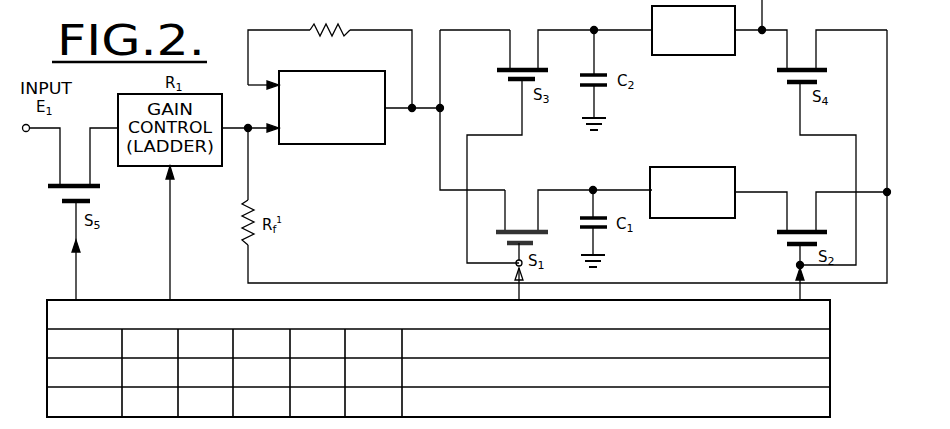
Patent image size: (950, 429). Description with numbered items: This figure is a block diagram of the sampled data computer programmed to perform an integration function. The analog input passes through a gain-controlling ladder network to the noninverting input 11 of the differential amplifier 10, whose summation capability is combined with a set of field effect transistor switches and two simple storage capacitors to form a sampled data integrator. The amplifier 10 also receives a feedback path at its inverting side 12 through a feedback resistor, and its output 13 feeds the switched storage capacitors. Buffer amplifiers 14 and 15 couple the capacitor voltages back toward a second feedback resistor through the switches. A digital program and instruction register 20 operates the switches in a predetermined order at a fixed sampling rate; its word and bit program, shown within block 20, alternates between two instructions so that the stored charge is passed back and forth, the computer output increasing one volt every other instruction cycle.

The differential amplifier 10 is at (335, 146).
The noninverting input 11 is at (268, 132).
The inverting (-) input of differential amplifier 12 is at (262, 82).
The output of differential amplifier 13 is at (405, 112).
The buffer amplifier 14 is at (695, 57).
The buffer amplifier 15 is at (690, 220).
The digital program and instruction register 20 is at (200, 300).